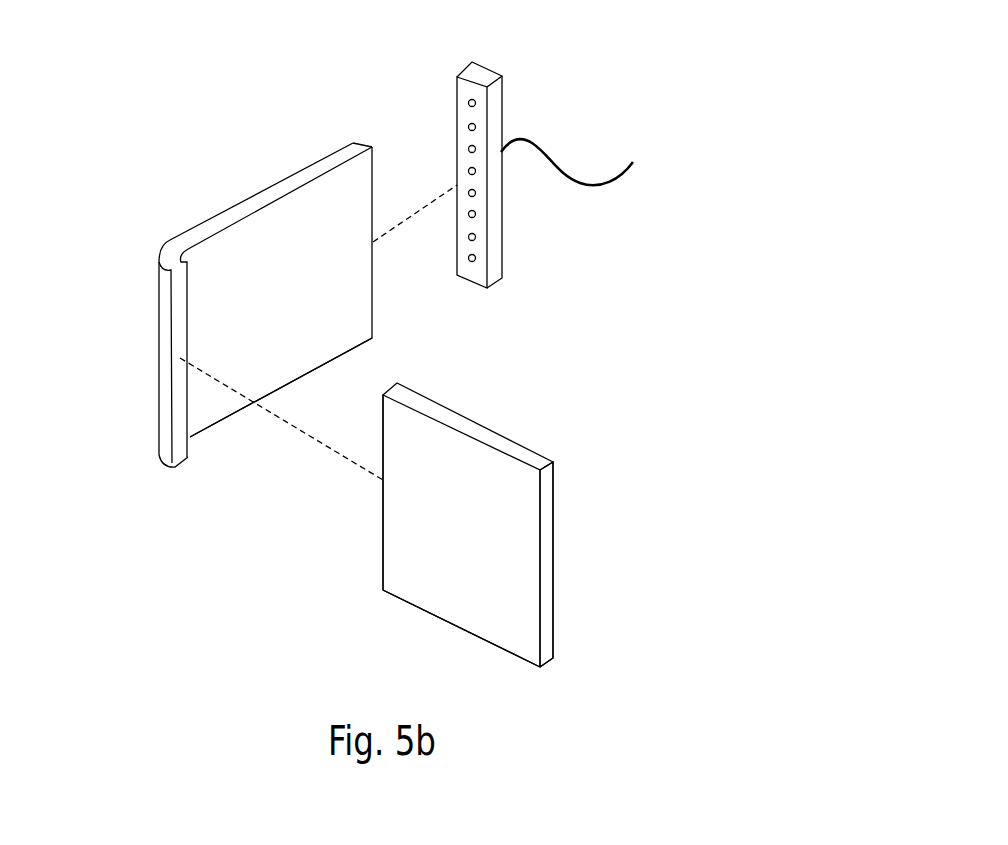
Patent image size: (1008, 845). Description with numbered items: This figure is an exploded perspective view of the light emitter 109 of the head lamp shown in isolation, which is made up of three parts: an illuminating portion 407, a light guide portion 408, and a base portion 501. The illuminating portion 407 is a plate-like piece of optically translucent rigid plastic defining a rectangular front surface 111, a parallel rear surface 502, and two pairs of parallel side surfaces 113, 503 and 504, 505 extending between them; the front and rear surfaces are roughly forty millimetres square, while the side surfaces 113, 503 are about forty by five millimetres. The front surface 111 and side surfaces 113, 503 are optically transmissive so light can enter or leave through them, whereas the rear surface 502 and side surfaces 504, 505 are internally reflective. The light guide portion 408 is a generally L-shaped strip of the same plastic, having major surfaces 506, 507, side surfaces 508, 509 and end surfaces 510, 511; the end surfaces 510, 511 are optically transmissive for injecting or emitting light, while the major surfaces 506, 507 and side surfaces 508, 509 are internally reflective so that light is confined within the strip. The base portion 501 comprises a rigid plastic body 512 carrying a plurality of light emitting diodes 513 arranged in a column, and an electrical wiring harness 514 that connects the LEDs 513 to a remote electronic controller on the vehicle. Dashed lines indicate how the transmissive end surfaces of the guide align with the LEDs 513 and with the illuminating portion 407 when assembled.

The light emitter 109 is at (690, 38).
The light guide portion 408 is at (176, 160).
The illuminating portion 407 is at (500, 688).
The side surface 508 is at (262, 198).
The major surface 506 is at (300, 307).
The major surface 507 is at (182, 215).
The end surface 511 is at (178, 425).
The side surface 509 is at (303, 384).
The end surface 510 is at (380, 256).
The base portion 501 is at (557, 242).
The body 512 is at (495, 262).
The light emitting diodes 513 is at (477, 102).
The electrical wiring harness 514 is at (622, 180).
The side surface 504 is at (480, 432).
The front surface 111 is at (481, 539).
The rear surface 502 is at (560, 519).
The side surface 503 is at (375, 512).
The side surface 505 is at (451, 631).
The side surface 113 is at (547, 617).